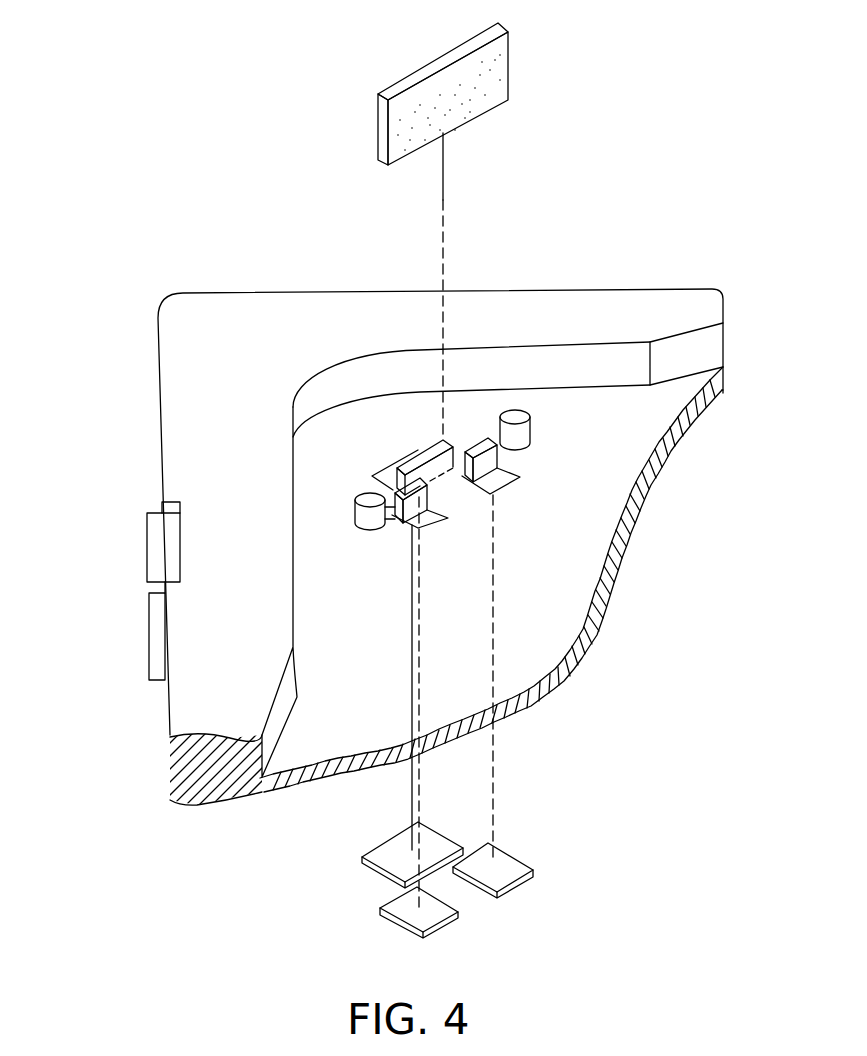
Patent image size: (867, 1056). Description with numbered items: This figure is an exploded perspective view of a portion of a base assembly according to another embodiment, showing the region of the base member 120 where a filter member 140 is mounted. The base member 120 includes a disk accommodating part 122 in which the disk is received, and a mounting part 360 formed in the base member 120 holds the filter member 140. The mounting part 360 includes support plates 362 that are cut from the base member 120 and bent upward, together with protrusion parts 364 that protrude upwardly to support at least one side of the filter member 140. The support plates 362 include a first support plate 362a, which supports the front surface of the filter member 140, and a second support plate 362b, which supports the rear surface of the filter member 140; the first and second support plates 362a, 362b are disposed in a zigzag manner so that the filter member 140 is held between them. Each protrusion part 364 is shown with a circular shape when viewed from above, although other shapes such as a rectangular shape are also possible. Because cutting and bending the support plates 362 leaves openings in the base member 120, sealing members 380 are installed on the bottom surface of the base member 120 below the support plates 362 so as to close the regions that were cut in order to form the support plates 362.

The base member 120 is at (178, 460).
The disk accommodating part 122 is at (598, 440).
The filter member 140 is at (502, 85).
The mounting part 360 is at (298, 304).
The support plates 362 is at (366, 348).
The first support plate 362a is at (484, 442).
The second support plate 362b is at (418, 455).
The protrusion part 364 is at (370, 500).
The sealing member 380 is at (380, 850).